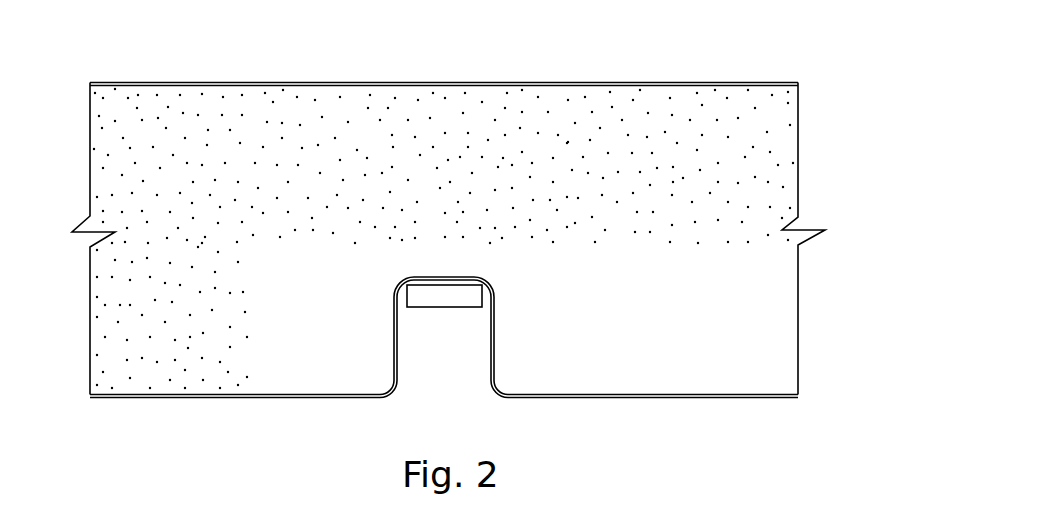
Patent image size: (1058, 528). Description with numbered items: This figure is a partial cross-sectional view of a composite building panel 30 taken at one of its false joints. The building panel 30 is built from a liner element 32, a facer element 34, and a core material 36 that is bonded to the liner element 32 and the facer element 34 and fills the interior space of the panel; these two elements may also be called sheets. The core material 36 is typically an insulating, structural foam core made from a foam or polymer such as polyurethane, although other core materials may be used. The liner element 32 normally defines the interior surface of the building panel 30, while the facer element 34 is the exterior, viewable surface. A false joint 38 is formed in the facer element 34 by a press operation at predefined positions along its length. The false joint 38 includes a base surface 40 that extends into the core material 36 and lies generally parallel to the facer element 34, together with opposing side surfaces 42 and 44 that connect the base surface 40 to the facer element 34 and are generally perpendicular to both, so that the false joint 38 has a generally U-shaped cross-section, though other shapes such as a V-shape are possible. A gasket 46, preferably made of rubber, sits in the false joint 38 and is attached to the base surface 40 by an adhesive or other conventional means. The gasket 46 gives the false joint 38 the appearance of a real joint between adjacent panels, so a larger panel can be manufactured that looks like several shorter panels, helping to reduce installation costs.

The composite building panel 30 is at (703, 58).
The liner element 32 is at (562, 82).
The facer element 34 is at (687, 398).
The core material 36 is at (470, 239).
The false joint 38 is at (428, 358).
The base surface 40 is at (435, 277).
The side surface 42 is at (395, 343).
The side surface 44 is at (497, 323).
The gasket 46 is at (453, 307).